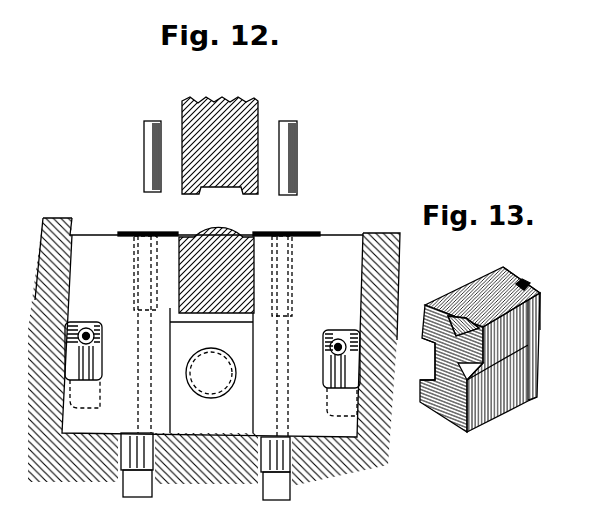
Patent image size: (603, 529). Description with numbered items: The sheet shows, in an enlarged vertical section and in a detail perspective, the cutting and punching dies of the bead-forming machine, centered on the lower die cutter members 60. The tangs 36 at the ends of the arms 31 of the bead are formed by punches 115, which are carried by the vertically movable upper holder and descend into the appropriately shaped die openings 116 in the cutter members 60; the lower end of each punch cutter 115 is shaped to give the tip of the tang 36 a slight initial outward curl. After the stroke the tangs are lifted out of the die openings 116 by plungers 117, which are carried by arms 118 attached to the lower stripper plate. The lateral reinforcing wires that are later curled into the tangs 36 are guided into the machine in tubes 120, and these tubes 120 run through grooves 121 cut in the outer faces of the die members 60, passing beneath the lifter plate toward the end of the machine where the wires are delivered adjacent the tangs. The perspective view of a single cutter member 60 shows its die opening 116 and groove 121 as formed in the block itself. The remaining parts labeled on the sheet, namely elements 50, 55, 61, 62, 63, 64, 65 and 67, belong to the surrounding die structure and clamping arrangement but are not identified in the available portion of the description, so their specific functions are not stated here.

In FIG. 12, the arms 31 is at (130, 228).
In FIG. 12, the tangs 36 is at (291, 244).
In FIG. 12, the die base 50 is at (385, 232).
In FIG. 12, the die insert 55 is at (238, 239).
In FIG. 12, the cutter members 60 is at (92, 243).
In FIG. 13, the cutter members 60 is at (486, 342).
In FIG. 12, the bore 61 is at (210, 434).
In FIG. 12, the slot 62 is at (165, 400).
In FIG. 13, the slot 62 is at (500, 403).
In FIG. 13, the top edge 63 is at (531, 283).
In FIG. 13, the side face 64 is at (540, 308).
In FIG. 13, the groove 65 is at (477, 320).
In FIG. 12, the punch 67 is at (205, 182).
In FIG. 12, the punches 115 is at (148, 131).
In FIG. 13, the die openings 116 is at (518, 286).
In FIG. 12, the plungers 117 is at (279, 464).
In FIG. 12, the arms 118 is at (278, 500).
In FIG. 12, the tubes 120 is at (82, 361).
In FIG. 12, the grooves 121 is at (70, 370).
In FIG. 13, the grooves 121 is at (432, 366).